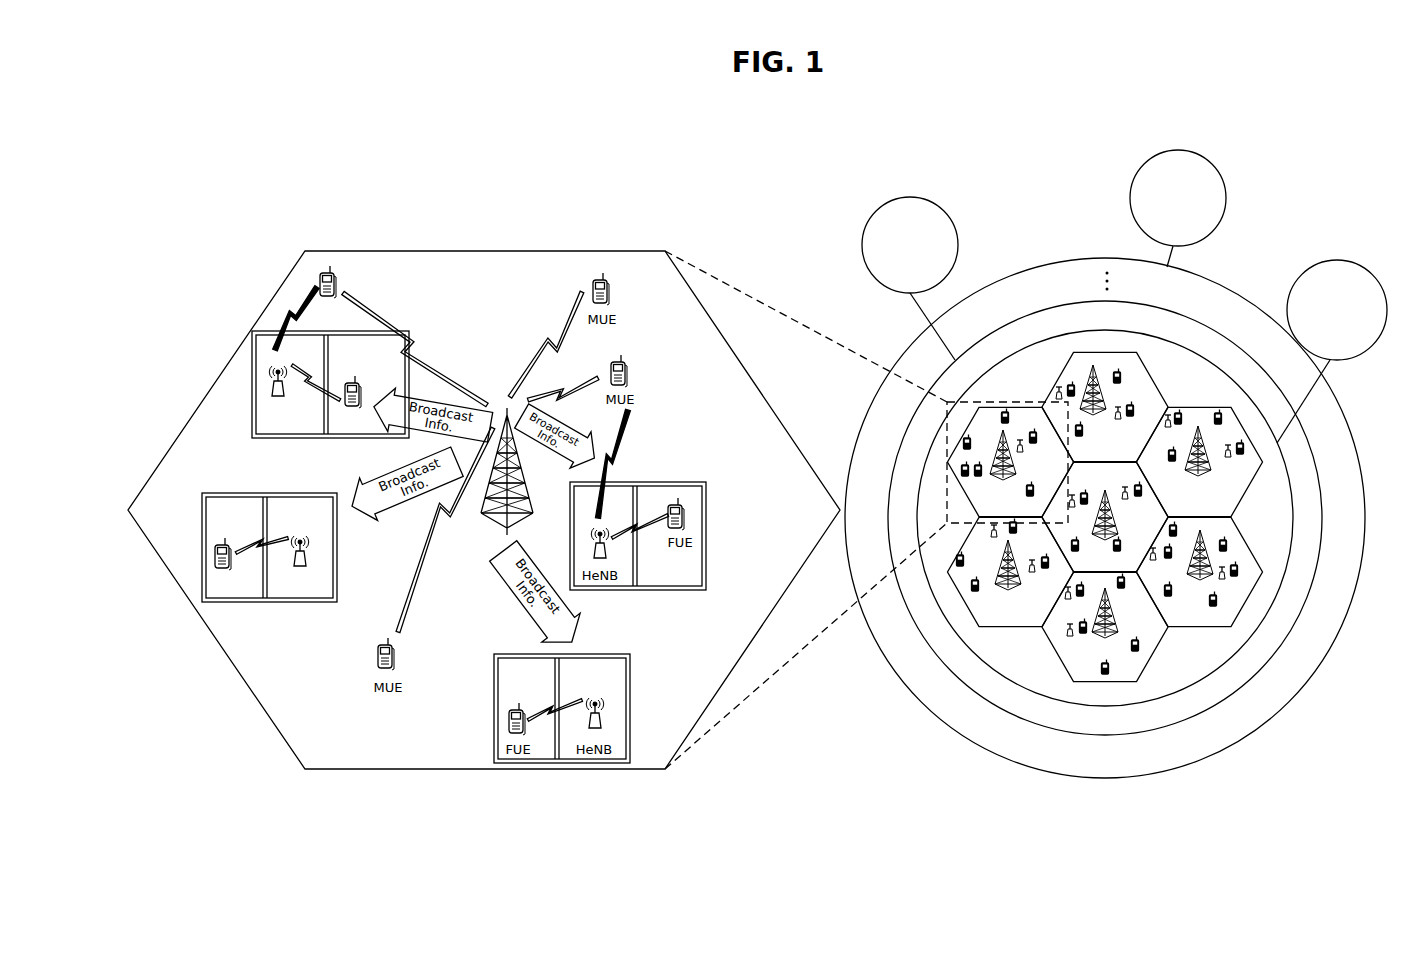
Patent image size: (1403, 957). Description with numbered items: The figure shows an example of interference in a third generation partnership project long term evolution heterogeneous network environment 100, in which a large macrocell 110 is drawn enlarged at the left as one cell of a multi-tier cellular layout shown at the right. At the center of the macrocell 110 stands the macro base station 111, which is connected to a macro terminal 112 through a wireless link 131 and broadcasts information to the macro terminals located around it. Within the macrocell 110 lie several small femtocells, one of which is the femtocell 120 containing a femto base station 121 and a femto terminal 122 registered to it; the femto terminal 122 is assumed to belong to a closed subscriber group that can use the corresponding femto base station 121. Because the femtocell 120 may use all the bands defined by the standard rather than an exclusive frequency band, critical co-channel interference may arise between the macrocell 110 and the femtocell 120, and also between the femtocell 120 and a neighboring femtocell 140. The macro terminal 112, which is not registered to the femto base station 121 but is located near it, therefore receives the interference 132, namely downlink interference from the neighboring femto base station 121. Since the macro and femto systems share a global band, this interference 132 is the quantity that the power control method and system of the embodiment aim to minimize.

The heterogeneous network environment 100 is at (1078, 819).
The macrocell 110 is at (474, 251).
The macro base station 111 is at (478, 516).
The macro terminal 112 is at (333, 267).
The femtocell 120 is at (281, 372).
The femto base station 121 is at (270, 380).
The femto terminal 122 is at (340, 406).
The wireless link 131 is at (390, 314).
The interference 132 is at (307, 305).
The femtocell 140 is at (202, 548).